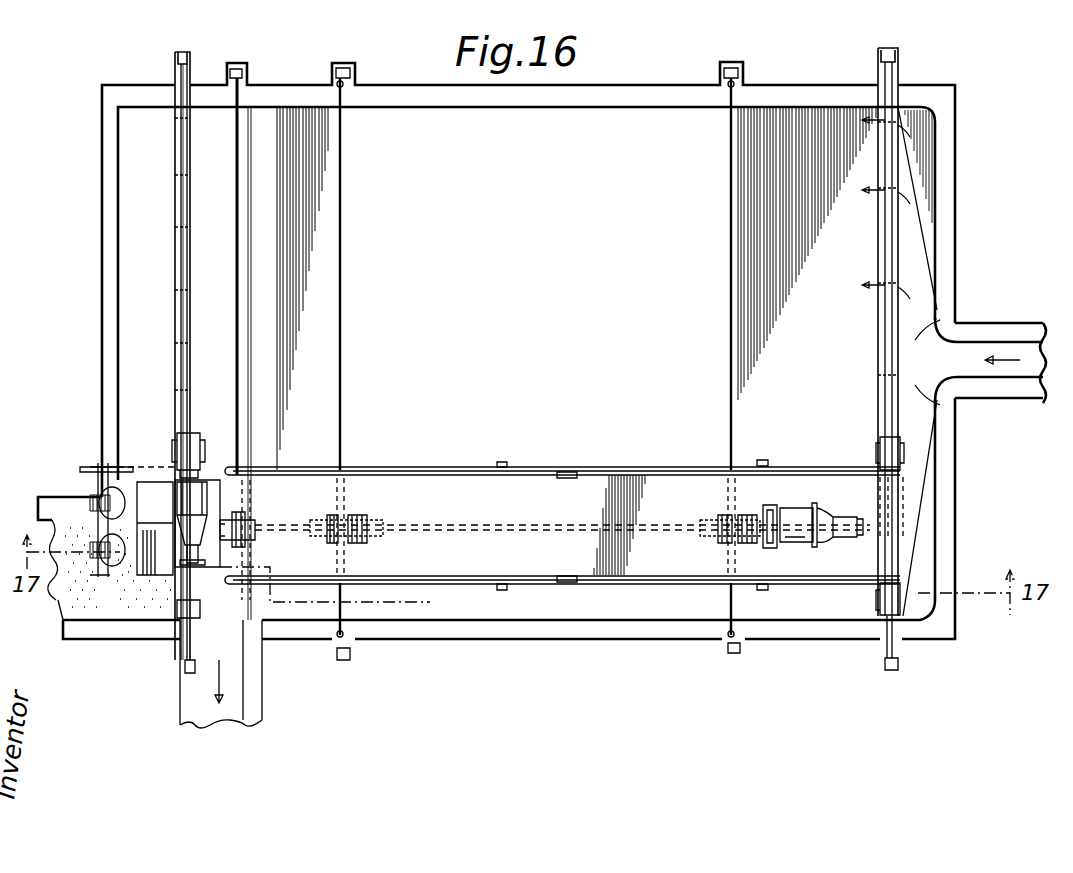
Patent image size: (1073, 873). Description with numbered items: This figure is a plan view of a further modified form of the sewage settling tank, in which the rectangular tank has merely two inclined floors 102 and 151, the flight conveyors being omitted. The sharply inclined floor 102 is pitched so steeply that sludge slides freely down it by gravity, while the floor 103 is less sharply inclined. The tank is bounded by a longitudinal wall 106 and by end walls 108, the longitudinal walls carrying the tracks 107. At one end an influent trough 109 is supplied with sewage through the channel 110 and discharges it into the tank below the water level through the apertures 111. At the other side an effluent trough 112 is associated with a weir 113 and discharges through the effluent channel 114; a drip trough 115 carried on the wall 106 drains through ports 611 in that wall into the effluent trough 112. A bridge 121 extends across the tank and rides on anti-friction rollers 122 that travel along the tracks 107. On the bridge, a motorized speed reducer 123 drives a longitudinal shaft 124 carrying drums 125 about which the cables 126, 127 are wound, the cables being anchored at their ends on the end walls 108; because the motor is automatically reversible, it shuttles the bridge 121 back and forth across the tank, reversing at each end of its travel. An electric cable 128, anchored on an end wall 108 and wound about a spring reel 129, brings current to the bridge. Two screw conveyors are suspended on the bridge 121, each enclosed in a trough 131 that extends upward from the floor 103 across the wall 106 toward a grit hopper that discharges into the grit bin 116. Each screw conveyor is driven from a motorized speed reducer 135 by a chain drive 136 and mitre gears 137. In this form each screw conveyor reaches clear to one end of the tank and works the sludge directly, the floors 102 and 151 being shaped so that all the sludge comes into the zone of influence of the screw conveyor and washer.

The sharply inclined floor 102 is at (780, 130).
The floor 103 is at (880, 252).
The longitudinal wall 106 is at (175, 208).
The tracks 107 is at (188, 208).
The end walls 108 is at (647, 94).
The influent trough 109 is at (915, 242).
The channel 110 is at (988, 340).
The apertures 111 is at (878, 211).
The effluent trough 112 is at (207, 122).
The weir 113 is at (250, 212).
The effluent channel 114 is at (205, 688).
The drip trough 115 is at (108, 118).
The grit bin 116 is at (70, 612).
The bridge 121 is at (620, 492).
The anti-friction rollers 122 is at (180, 445).
The motorized speed reducer 123 is at (800, 544).
The longitudinal shaft 124 is at (470, 526).
The drums 125 is at (343, 518).
The cable 126 is at (343, 316).
The cable 127 is at (342, 613).
The electric cable 128 is at (236, 369).
The spring reel 129 is at (246, 518).
The trough 131 is at (128, 522).
The motorized speed reducer 135 is at (201, 490).
The chain drive 136 is at (140, 467).
The mitre gears 137 is at (96, 495).
The inclined floor 151 is at (370, 150).
The ports 611 is at (175, 175).